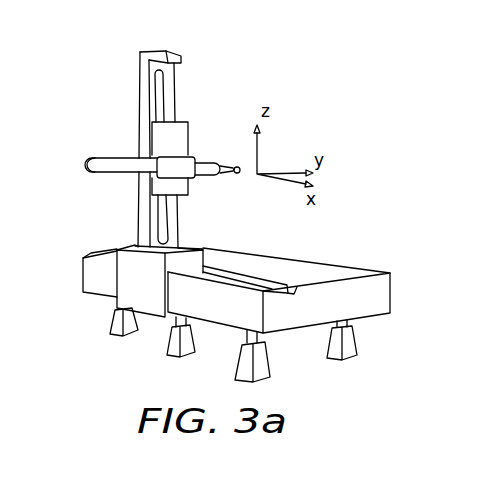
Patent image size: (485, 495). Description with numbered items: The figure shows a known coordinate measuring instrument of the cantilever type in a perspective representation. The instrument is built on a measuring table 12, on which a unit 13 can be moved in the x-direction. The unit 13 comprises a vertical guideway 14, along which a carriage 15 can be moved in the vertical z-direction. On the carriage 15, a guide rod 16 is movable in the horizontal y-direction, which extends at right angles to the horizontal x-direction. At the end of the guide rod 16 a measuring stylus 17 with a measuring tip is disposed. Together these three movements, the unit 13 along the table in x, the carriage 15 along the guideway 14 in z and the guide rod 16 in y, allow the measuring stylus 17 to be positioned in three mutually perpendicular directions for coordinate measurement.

The measuring table 12 is at (343, 277).
The unit 13 is at (130, 275).
The vertical guideway 14 is at (166, 84).
The carriage 15 is at (168, 133).
The guide rod 16 is at (112, 168).
The measuring stylus 17 is at (232, 176).